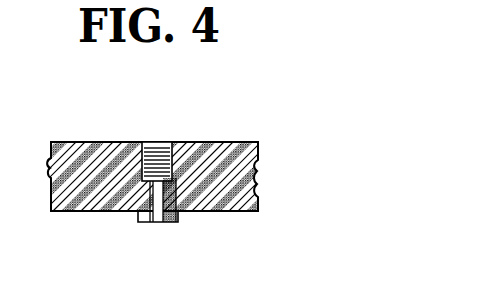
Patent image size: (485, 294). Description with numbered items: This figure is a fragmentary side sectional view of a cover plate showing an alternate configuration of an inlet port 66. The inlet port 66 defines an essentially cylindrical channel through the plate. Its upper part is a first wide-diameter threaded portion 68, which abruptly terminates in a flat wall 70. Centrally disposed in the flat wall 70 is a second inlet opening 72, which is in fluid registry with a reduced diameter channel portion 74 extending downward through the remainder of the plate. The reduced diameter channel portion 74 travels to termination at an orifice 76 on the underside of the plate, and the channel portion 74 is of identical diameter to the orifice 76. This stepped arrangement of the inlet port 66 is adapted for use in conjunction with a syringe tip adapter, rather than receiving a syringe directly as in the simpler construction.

The inlet port 66 is at (158, 134).
The first wide-diameter threaded portion 68 is at (150, 141).
The flat wall 70 is at (163, 156).
The second inlet opening 72 is at (147, 196).
The reduced diameter channel portion 74 is at (165, 224).
The orifice 76 is at (157, 228).